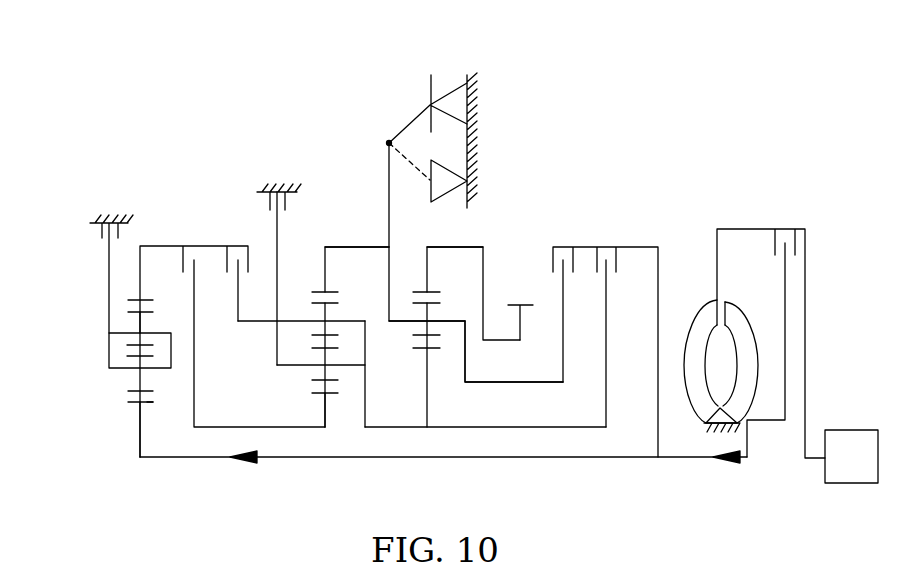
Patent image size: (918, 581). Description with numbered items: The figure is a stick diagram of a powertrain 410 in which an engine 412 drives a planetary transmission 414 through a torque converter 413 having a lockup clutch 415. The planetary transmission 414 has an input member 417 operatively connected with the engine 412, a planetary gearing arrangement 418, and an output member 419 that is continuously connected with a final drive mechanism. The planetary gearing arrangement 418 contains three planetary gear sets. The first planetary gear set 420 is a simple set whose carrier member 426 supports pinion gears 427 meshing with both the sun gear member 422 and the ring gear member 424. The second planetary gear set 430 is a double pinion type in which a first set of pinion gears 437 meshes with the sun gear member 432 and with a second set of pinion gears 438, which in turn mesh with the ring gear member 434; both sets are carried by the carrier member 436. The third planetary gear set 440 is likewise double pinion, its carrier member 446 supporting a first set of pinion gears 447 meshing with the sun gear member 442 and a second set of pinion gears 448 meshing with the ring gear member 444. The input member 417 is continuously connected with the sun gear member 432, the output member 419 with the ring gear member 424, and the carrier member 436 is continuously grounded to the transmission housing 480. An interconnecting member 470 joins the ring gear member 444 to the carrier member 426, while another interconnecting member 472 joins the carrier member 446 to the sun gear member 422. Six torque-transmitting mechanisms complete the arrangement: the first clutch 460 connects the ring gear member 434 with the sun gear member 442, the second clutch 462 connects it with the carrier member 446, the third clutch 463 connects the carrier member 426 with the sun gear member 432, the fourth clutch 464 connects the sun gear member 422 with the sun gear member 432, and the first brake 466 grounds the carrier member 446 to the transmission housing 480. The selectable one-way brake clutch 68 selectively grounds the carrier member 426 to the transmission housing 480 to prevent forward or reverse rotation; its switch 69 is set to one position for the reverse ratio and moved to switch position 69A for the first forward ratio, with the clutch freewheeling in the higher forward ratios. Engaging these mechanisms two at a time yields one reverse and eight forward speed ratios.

The selectable one-way brake clutch (SOWBC) 68 is at (393, 135).
The switch 69 is at (410, 125).
The switch position 69A is at (410, 167).
The powertrain 410 is at (670, 120).
The engine 412 is at (851, 456).
The torque converter 413 is at (757, 430).
The planetary transmission 414 is at (647, 197).
The lockup clutch 415 is at (788, 262).
The input member 417 is at (703, 458).
The planetary gearing arrangement 418 is at (540, 80).
The output member 419 is at (521, 322).
The first planetary gear set 420 is at (437, 357).
The sun gear member 422 is at (425, 348).
The ring gear member 424 is at (433, 290).
The carrier member 426 is at (450, 323).
The pinion gears 427 is at (430, 313).
The second planetary gear set 430 is at (130, 410).
The sun gear member 432 is at (147, 403).
The ring gear member 434 is at (133, 298).
The carrier member 436 is at (109, 350).
The first set of pinion gears 437 is at (132, 385).
The second set of pinion gears 438 is at (137, 321).
The third planetary gear set 440 is at (337, 405).
The sun gear member 442 is at (320, 395).
The ring gear member 444 is at (330, 290).
The carrier member 446 is at (277, 358).
The first set of pinion gears 447 is at (328, 372).
The second set of pinion gears 448 is at (327, 313).
The first clutch 460 is at (207, 282).
The second clutch 462 is at (248, 277).
The third clutch 463 is at (570, 280).
The fourth clutch 464 is at (614, 282).
The first brake 466 is at (292, 213).
The interconnecting member 470 is at (339, 246).
The interconnecting member 472 is at (393, 428).
The transmission housing 480 is at (128, 217).